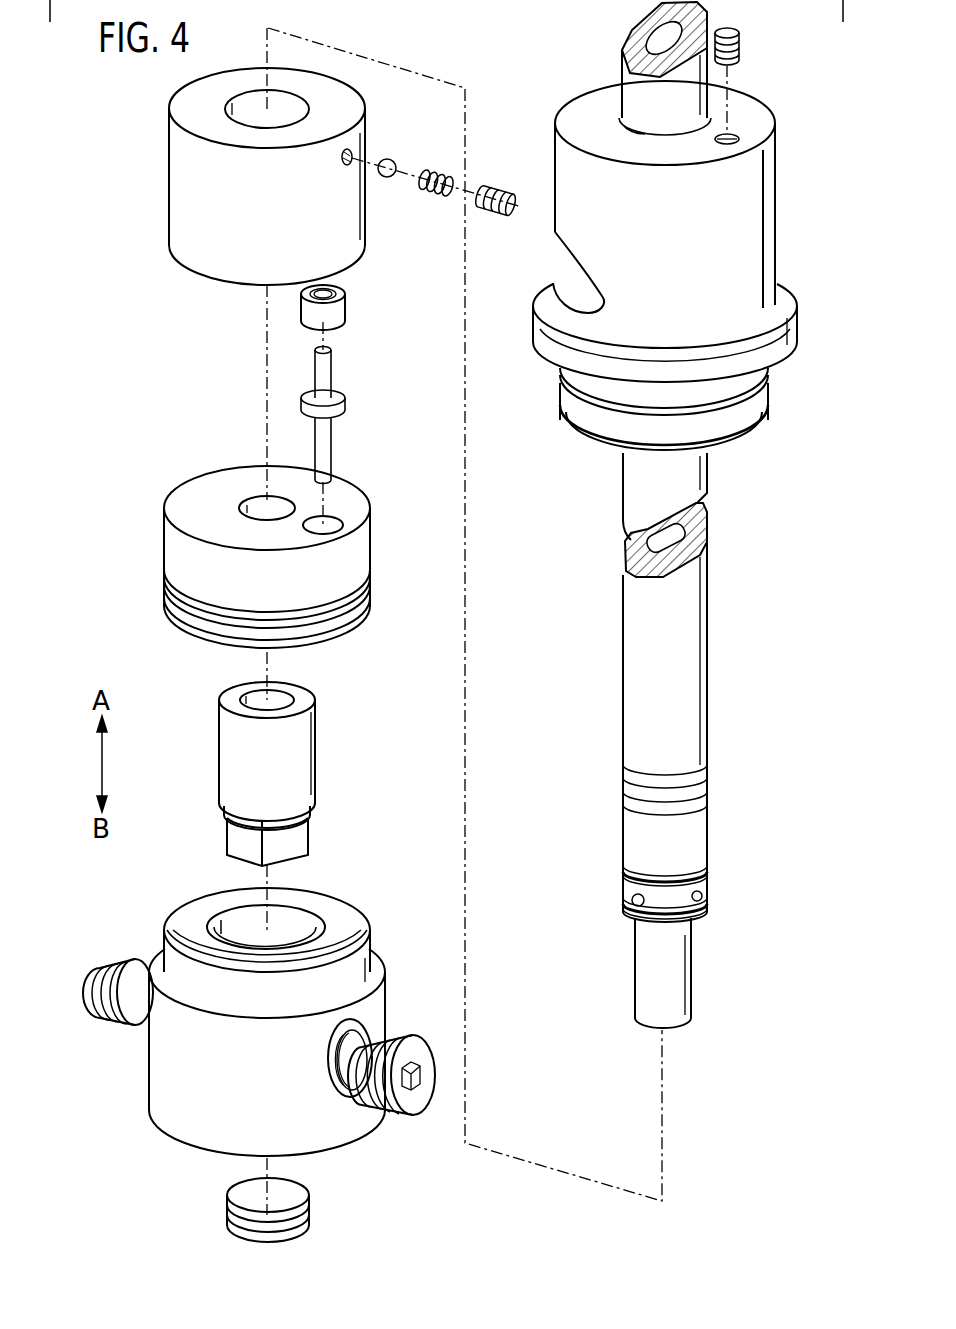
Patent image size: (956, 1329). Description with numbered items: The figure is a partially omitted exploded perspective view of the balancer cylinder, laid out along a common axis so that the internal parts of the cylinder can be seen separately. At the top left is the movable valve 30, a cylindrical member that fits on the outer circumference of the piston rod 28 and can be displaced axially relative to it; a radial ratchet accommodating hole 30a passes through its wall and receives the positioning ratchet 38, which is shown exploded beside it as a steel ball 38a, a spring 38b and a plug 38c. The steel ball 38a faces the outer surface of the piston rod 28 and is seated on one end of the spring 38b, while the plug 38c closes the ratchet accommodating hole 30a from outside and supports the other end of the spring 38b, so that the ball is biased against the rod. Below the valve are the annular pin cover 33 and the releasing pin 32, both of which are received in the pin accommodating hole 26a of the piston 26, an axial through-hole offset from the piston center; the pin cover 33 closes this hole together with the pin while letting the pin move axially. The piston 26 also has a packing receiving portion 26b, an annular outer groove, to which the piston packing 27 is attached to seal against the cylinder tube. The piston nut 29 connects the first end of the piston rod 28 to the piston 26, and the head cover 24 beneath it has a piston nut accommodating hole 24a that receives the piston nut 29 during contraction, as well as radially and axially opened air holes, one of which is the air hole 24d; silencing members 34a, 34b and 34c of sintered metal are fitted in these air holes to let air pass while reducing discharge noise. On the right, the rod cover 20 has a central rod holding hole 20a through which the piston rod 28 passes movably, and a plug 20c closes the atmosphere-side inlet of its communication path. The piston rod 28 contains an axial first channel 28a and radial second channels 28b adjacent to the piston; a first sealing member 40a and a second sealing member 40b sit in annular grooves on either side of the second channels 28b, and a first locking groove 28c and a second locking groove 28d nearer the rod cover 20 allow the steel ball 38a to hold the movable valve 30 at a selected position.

The rod cover 20 is at (664, 265).
The rod holding hole 20a is at (592, 113).
The plug 20c is at (742, 47).
The head cover 24 is at (264, 1047).
The piston nut accommodating hole 24a is at (310, 920).
The air hole 24d is at (350, 1097).
The piston 26 is at (281, 562).
The pin accommodating hole 26a is at (335, 525).
The packing receiving portion 26b is at (206, 600).
The piston packing 27 is at (184, 602).
The piston rod 28 is at (651, 514).
The first channel 28a is at (655, 35).
The second channels 28b is at (644, 901).
The first locking groove 28c is at (712, 772).
The second locking groove 28d is at (712, 800).
The piston nut 29 is at (318, 728).
The movable valve 30 is at (282, 176).
The ratchet accommodating hole 30a is at (355, 153).
The releasing pin 32 is at (331, 442).
The pin cover 33 is at (345, 312).
The silencing member 34a is at (248, 1193).
The silencing member 34b is at (118, 958).
The silencing member 34c is at (418, 1050).
The positioning ratchet 38 is at (446, 226).
The steel ball 38a is at (385, 178).
The spring 38b is at (440, 194).
The plug 38c is at (496, 221).
The first sealing member 40a is at (632, 868).
The second sealing member 40b is at (625, 906).